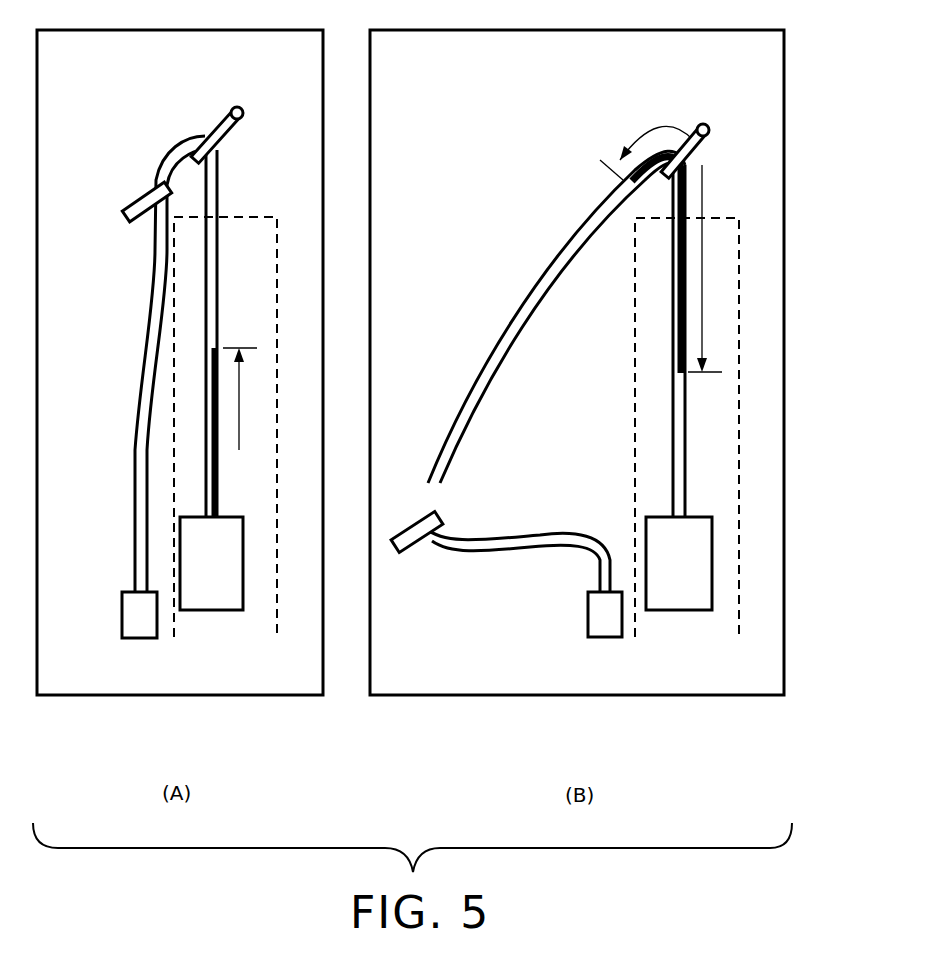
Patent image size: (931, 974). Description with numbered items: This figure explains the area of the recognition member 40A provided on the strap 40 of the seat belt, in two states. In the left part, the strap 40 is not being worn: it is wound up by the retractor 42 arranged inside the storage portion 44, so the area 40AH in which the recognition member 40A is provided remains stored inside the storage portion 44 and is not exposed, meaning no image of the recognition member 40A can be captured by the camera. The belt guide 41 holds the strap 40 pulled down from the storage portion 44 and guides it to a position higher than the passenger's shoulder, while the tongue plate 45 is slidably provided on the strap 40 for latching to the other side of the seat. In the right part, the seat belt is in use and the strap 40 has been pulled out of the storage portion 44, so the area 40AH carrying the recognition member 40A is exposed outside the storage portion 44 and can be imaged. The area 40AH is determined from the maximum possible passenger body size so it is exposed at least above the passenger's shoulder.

The strap 40 is at (145, 353).
The recognition member 40A is at (217, 480).
The area 40AH is at (239, 450).
The belt guide 41 is at (218, 125).
The retractor 42 is at (210, 612).
The storage portion 44 is at (257, 215).
The tongue plate 45 is at (140, 195).